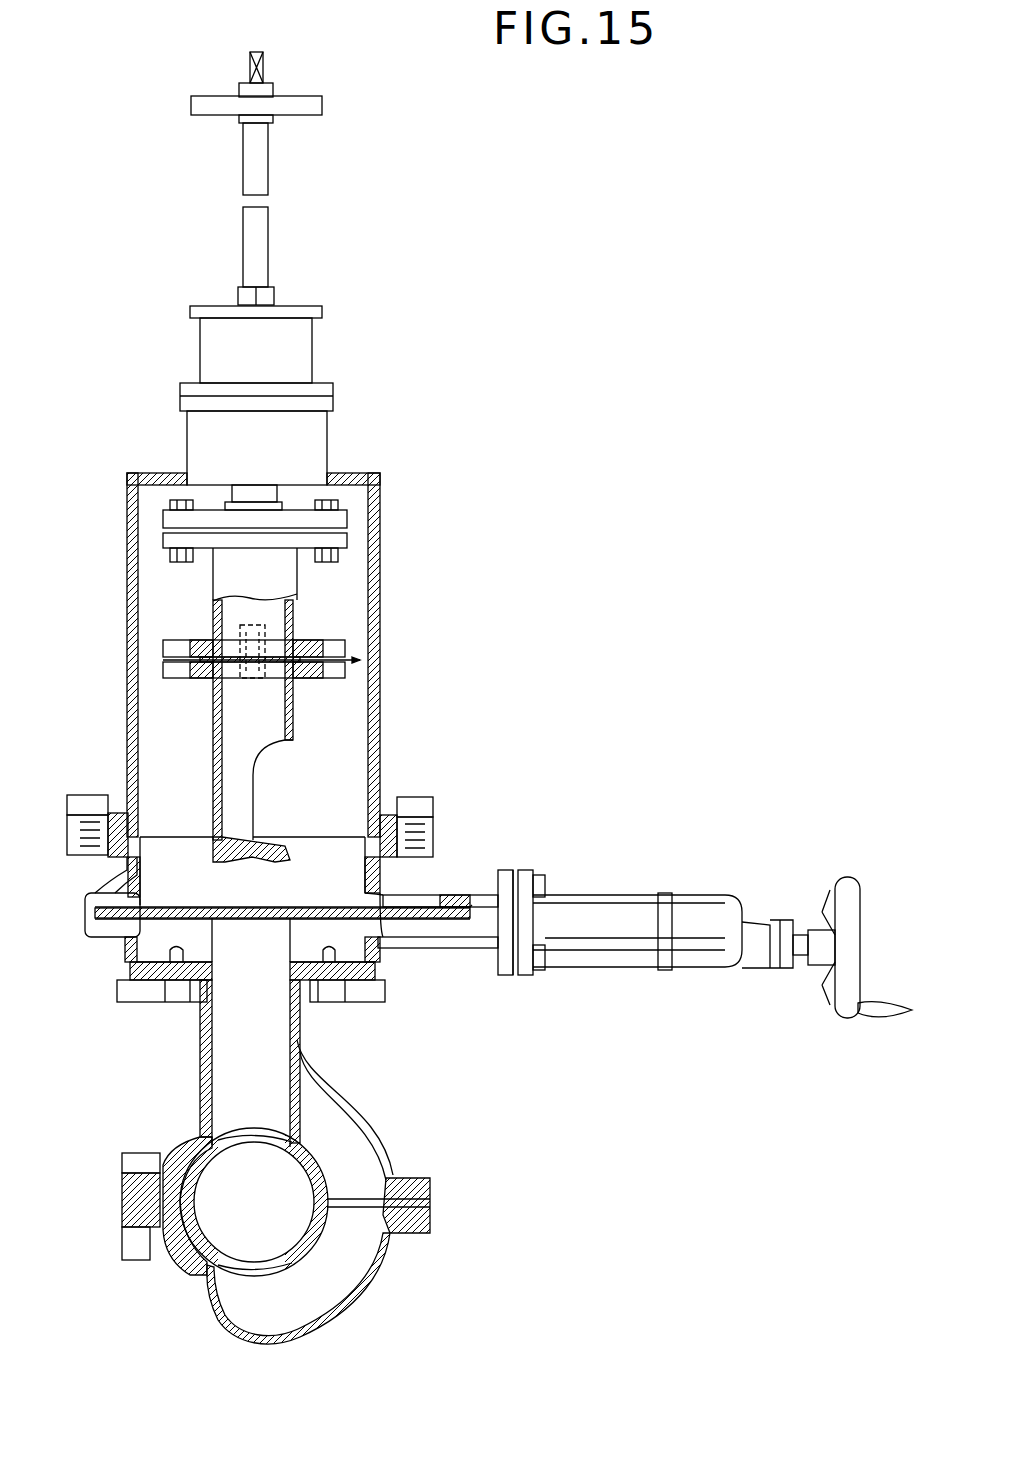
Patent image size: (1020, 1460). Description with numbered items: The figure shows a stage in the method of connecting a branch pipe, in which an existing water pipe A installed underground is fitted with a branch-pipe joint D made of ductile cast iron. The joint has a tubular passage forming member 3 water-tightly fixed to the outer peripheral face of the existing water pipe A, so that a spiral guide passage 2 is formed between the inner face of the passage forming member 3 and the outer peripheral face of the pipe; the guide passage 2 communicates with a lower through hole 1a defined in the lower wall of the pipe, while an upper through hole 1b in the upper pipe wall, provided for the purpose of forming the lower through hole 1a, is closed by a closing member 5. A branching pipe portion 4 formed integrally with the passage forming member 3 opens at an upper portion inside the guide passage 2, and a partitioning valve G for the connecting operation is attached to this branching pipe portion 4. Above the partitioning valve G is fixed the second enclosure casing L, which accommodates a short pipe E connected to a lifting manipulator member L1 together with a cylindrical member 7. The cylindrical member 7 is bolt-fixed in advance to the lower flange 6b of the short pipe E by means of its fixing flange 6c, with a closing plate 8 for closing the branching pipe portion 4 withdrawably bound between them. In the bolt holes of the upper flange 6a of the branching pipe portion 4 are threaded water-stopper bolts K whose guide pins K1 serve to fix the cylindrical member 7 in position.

The lifting manipulator member L1 is at (260, 247).
The second enclosure casing L is at (382, 500).
The short pipe E is at (292, 582).
The closing plate 8 is at (215, 626).
The cylindrical member 7 is at (213, 730).
The lower flange 6b is at (335, 636).
The fixing flange 6c is at (338, 678).
The closing member 5 is at (265, 862).
The upper flange 6a is at (137, 950).
The guide pin K1 is at (178, 962).
The water-stopper bolt K is at (176, 998).
The partitioning valve G is at (467, 893).
The branching pipe portion 4 is at (200, 1052).
The branch-pipe joint D is at (356, 1096).
The existing water pipe A is at (320, 1170).
The upper through hole 1b is at (250, 1132).
The lower through hole 1a is at (242, 1278).
The guide passage 2 is at (312, 1300).
The passage forming member 3 is at (393, 1258).